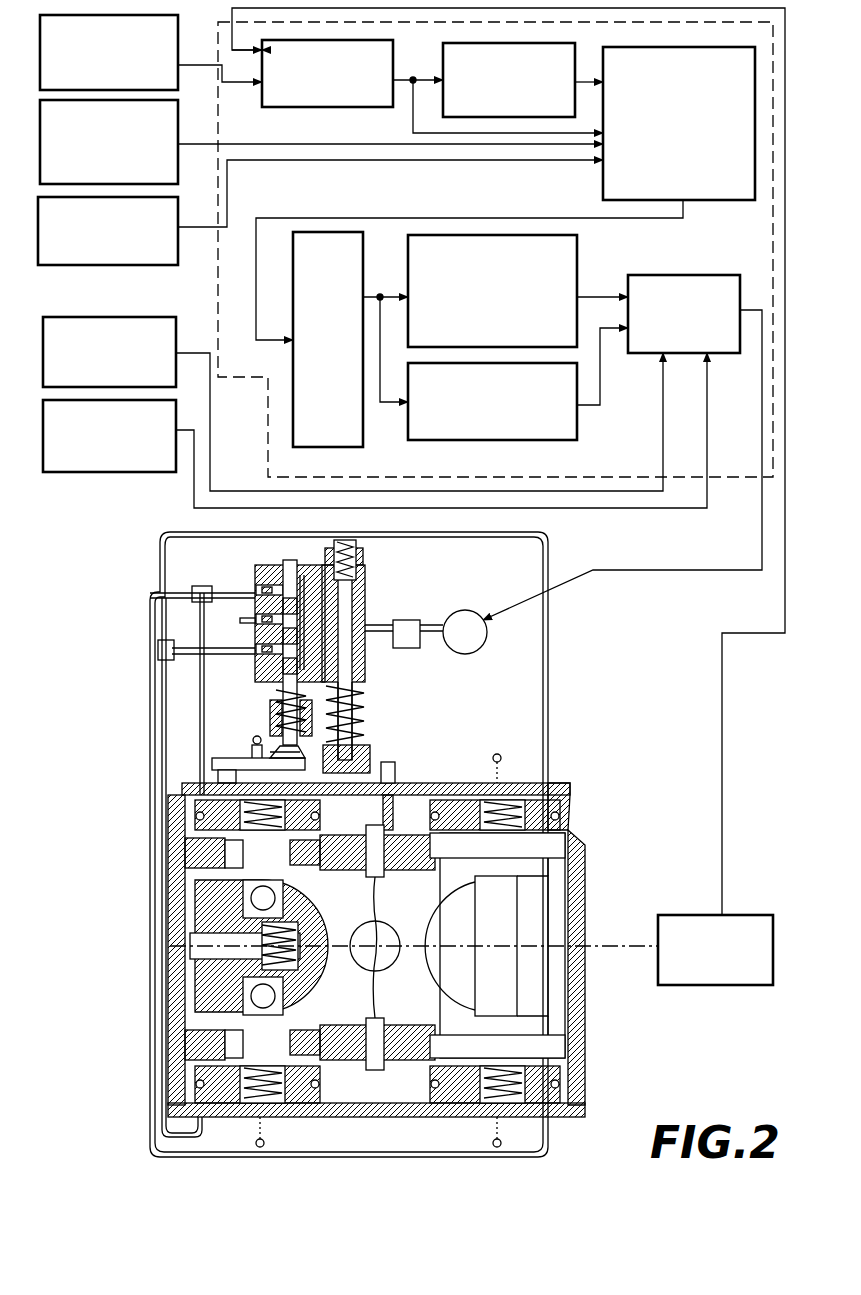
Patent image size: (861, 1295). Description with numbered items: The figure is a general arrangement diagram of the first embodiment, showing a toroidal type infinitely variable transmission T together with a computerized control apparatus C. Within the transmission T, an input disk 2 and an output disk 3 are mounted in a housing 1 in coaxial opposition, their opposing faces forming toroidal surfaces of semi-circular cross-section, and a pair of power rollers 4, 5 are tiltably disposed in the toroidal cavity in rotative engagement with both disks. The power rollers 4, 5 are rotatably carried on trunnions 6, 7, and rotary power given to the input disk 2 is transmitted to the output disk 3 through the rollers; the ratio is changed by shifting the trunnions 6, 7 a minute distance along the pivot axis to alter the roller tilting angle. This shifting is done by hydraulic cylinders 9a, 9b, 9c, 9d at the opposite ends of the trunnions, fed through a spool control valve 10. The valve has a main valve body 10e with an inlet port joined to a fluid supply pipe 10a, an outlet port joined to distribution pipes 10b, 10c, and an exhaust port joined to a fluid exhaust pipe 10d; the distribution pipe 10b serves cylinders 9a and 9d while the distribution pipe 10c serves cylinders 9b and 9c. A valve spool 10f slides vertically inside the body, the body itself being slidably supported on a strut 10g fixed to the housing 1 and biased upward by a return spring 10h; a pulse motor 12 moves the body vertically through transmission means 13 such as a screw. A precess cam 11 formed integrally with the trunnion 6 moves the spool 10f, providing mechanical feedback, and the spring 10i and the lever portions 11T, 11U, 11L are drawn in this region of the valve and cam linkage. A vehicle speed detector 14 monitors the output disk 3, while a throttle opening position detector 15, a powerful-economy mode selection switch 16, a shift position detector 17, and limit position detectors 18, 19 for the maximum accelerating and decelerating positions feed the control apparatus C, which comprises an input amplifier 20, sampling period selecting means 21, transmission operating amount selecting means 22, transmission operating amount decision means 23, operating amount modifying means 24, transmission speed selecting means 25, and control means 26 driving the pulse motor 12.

The housing 1 is at (527, 783).
The input disk 2 is at (355, 1085).
The output disk 3 is at (418, 1085).
The power roller 4 is at (312, 905).
The power roller 5 is at (432, 903).
The trunnion 6 is at (195, 918).
The trunnion 7 is at (548, 913).
The hydraulic cylinder 9a is at (240, 1100).
The hydraulic cylinder 9b is at (184, 803).
The hydraulic cylinder 9c is at (472, 1100).
The hydraulic cylinder 9d is at (452, 782).
The spool control valve 10 is at (310, 635).
The fluid supply pipe 10a is at (246, 620).
The distribution pipe 10b is at (250, 617).
The distribution pipe 10c is at (252, 655).
The fluid exhaust pipe 10d is at (316, 565).
The main valve body 10e is at (262, 676).
The valve spool 10f is at (286, 564).
The strut 10g is at (352, 612).
The return spring 10h is at (366, 694).
The spring 10i is at (282, 710).
The precess cam 11 is at (300, 747).
The lever pivot 11T is at (256, 758).
The lever upper end 11U is at (226, 783).
The lever lower end 11L is at (356, 760).
The pulse motor 12 is at (488, 639).
The transmission means 13 is at (416, 648).
The vehicle speed detector 14 is at (688, 985).
The throttle opening position detector 15 is at (180, 75).
The powerful-economy mode selection switch 16 is at (189, 108).
The shift position detector 17 is at (180, 202).
The limit position detector 18 is at (148, 316).
The limit position detector 19 is at (178, 416).
The input amplifier 20 is at (394, 58).
The sampling period selecting means 21 is at (560, 45).
The transmission operating amount selecting means 22 is at (603, 178).
The transmission operating amount decision means 23 is at (320, 232).
The operating amount modifying means 24 is at (460, 235).
The transmission speed selecting means 25 is at (577, 420).
The control means 26 is at (680, 275).
The computerized control apparatus C is at (220, 44).
The toroidal type infinitely variable transmission T is at (578, 822).